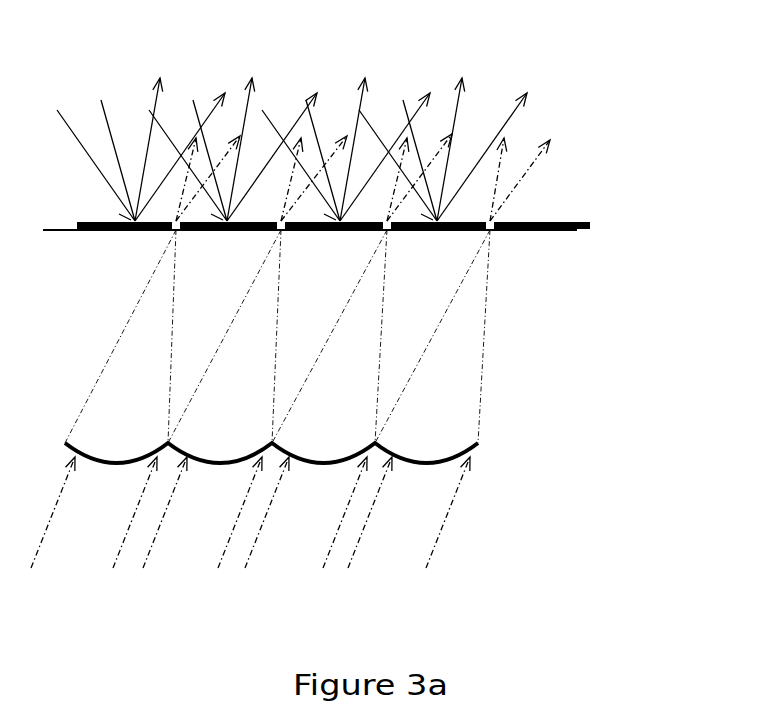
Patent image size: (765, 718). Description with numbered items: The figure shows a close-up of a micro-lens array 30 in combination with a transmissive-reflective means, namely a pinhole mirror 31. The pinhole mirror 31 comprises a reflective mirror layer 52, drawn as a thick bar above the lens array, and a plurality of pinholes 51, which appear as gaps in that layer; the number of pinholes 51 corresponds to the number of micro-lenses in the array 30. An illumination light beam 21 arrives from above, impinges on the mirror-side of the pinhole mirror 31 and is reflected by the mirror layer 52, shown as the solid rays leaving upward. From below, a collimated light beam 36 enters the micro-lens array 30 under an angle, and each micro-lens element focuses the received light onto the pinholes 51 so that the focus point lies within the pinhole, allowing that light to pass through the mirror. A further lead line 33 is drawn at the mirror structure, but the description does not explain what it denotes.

The illumination light beam 21 is at (51, 113).
The pinholes 51 is at (512, 195).
The reflective mirror layer 52 is at (583, 222).
The pinhole mirror 31 is at (507, 231).
The reflective coating layer 33 is at (565, 231).
The micro-lens array 30 is at (480, 447).
The collimated light beam 36 is at (433, 537).